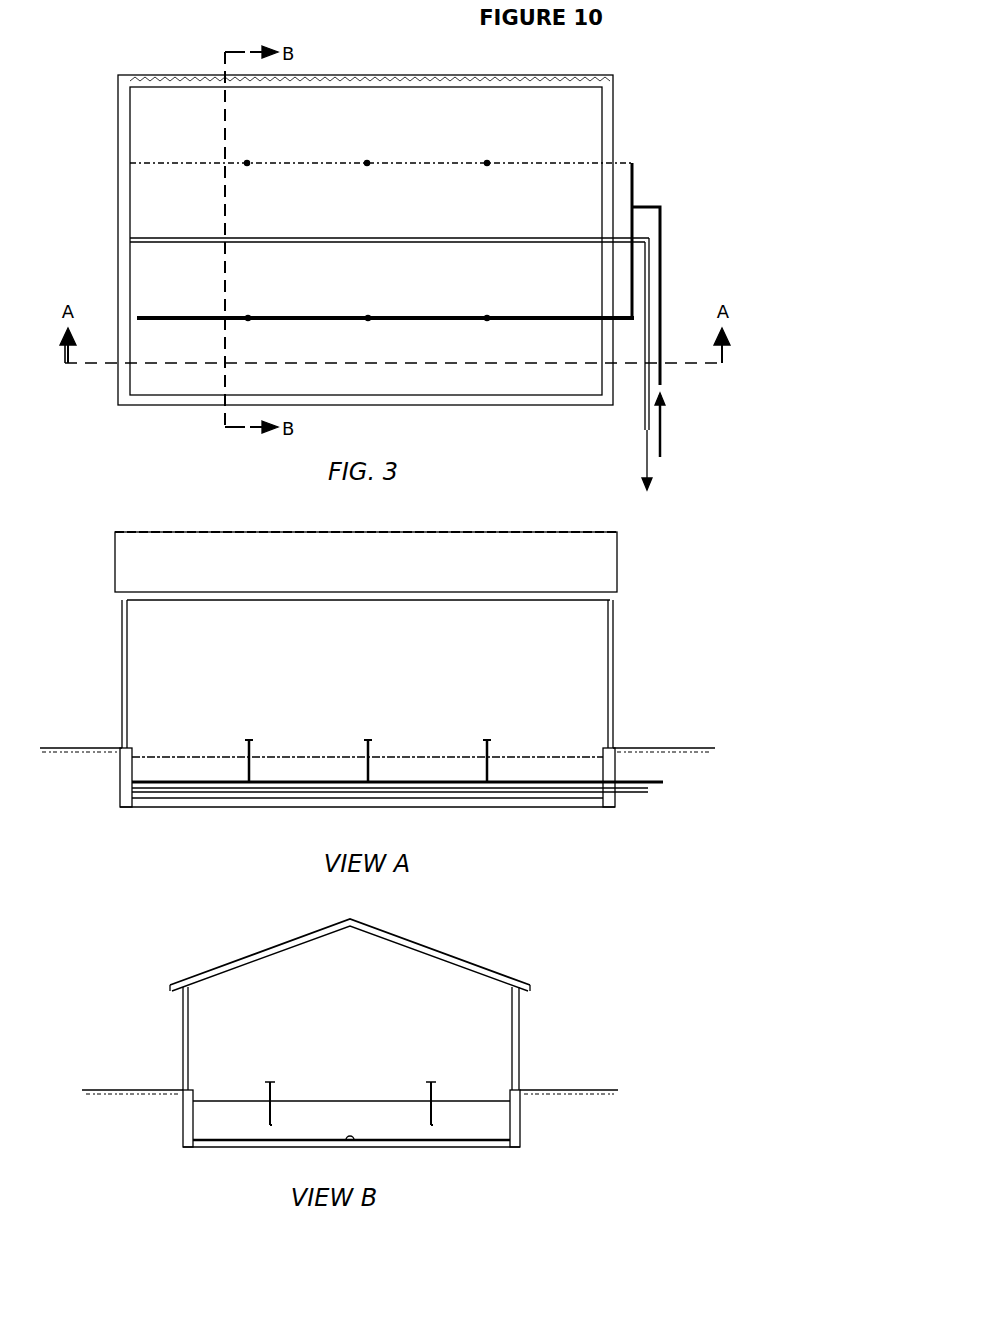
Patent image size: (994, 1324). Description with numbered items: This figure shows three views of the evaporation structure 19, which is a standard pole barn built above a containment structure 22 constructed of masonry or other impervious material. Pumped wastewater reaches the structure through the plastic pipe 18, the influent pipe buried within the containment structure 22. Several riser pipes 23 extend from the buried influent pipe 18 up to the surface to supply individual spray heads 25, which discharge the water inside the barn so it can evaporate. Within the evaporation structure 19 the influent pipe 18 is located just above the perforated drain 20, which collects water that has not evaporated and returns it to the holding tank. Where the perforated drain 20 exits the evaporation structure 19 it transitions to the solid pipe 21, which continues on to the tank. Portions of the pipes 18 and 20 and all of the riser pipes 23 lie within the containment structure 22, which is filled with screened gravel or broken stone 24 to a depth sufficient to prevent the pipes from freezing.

The plastic pipe 18 is at (167, 163).
The evaporation structure 19 is at (337, 545).
The perforated drain 20 is at (378, 245).
The solid pipe 21 is at (643, 408).
The containment structure 22 is at (120, 202).
The riser pipe 23 is at (252, 741).
The screened gravel or broken stone 24 is at (187, 757).
The spray head 25 is at (249, 165).